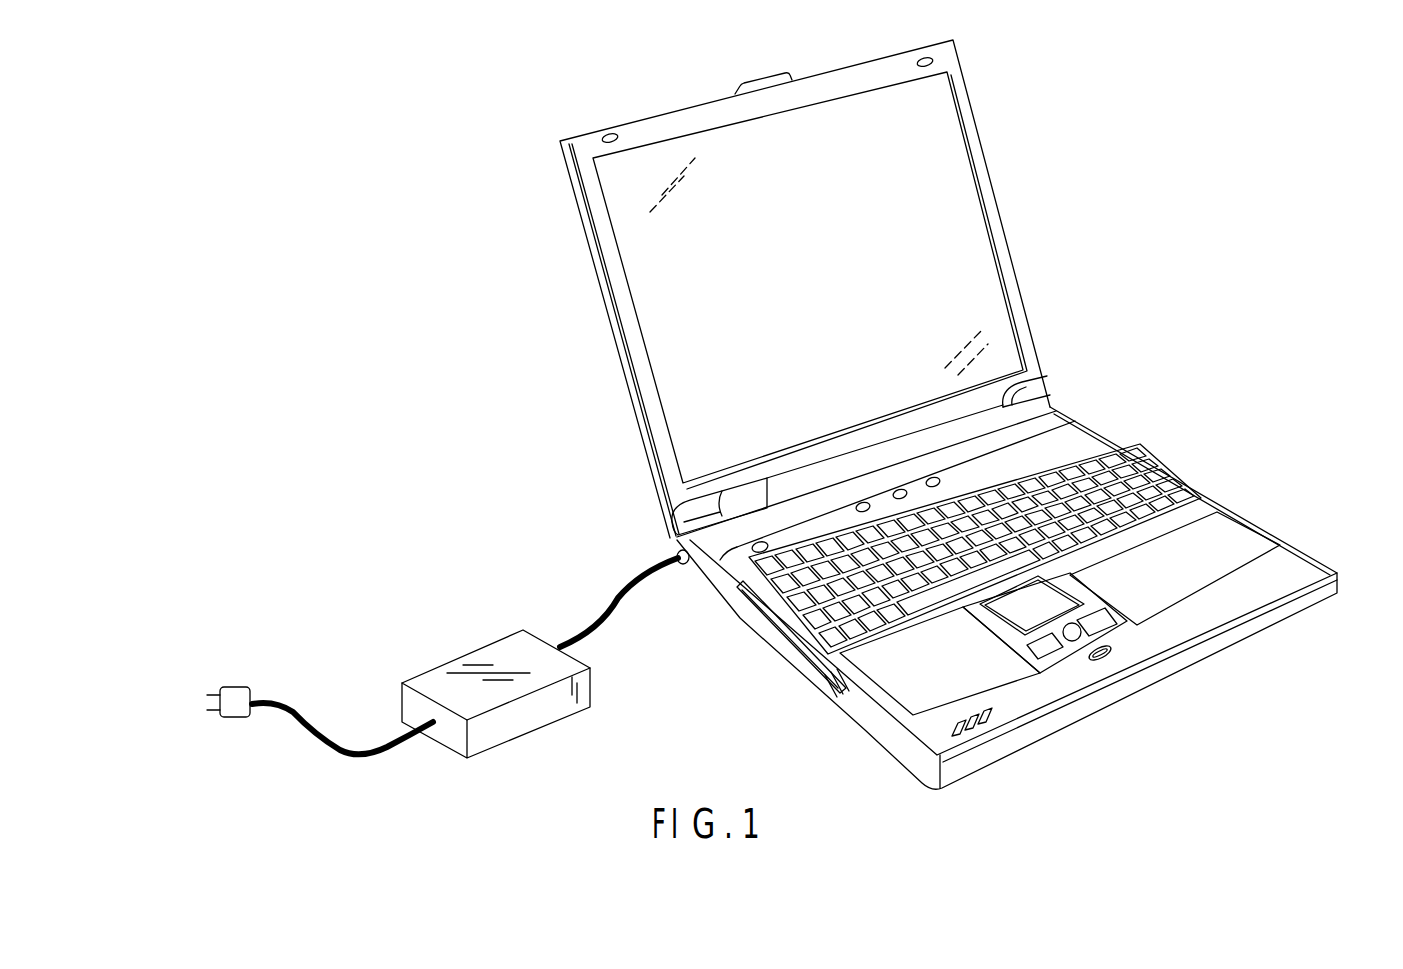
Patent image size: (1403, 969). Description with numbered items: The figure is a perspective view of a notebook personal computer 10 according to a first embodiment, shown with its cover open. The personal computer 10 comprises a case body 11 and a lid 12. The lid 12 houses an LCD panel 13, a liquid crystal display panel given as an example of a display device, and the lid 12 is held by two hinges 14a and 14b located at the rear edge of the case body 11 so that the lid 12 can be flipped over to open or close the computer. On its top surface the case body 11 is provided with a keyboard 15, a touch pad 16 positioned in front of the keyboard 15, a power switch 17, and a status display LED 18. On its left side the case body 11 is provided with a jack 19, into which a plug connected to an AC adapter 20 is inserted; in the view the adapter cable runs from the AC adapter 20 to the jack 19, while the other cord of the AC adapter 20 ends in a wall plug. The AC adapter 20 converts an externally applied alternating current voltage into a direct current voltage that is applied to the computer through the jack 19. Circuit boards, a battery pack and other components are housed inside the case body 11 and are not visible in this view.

The personal computer 10 is at (508, 395).
The case body 11 is at (888, 740).
The lid 12 is at (1003, 260).
The LCD panel 13 is at (950, 160).
The hinge 14a is at (712, 491).
The hinge 14b is at (1007, 412).
The keyboard 15 is at (1105, 482).
The touch pad 16 is at (1042, 603).
The power switch 17 is at (745, 546).
The status display LED 18 is at (992, 718).
The jack 19 is at (693, 578).
The AC adapter 20 is at (531, 721).